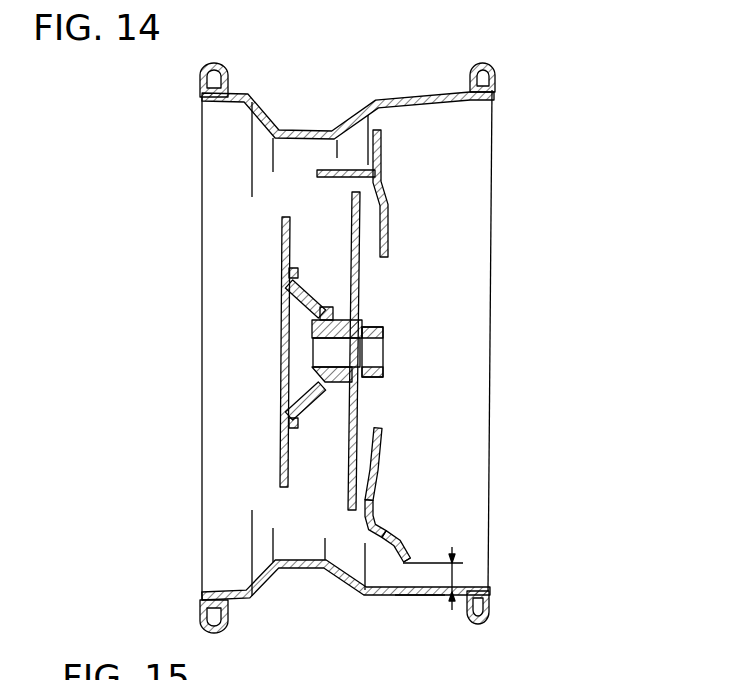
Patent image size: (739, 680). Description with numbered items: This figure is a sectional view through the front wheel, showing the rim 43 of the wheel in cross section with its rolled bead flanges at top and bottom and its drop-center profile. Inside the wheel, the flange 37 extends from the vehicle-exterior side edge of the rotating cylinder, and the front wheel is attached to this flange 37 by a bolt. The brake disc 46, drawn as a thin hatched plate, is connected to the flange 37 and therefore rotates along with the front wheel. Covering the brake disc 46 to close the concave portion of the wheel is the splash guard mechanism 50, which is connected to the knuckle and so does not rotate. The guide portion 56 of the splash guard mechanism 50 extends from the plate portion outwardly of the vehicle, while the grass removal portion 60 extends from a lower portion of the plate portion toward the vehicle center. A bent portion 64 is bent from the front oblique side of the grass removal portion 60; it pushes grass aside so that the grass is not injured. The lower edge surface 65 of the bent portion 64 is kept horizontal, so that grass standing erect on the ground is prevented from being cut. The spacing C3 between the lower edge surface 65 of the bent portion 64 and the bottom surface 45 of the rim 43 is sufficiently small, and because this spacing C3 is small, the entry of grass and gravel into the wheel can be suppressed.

The flange 37 is at (290, 216).
The rim 43 is at (490, 585).
The bottom surface of the rim 45 is at (423, 588).
The brake disc 46 is at (360, 270).
The splash guard mechanism 50 is at (395, 443).
The guide portion 56 is at (317, 173).
The grass removal portion 60 is at (392, 530).
The bent portion 64 is at (410, 552).
The lower edge surface 65 is at (404, 567).
The spacing C3 is at (452, 580).